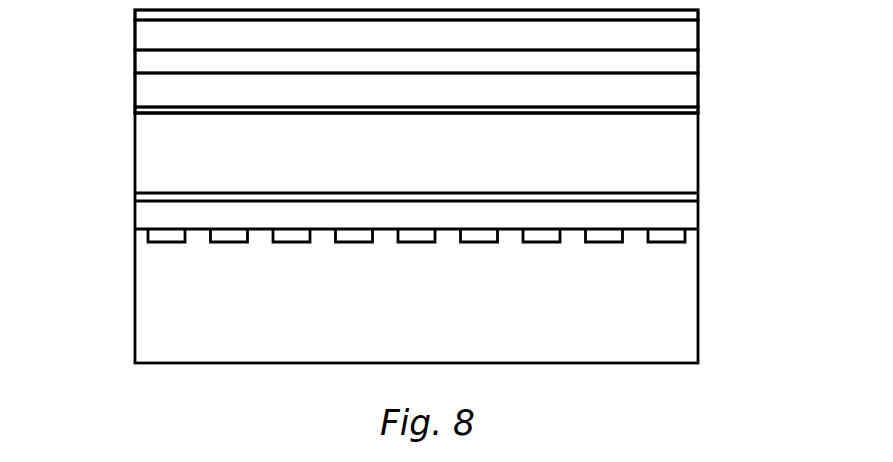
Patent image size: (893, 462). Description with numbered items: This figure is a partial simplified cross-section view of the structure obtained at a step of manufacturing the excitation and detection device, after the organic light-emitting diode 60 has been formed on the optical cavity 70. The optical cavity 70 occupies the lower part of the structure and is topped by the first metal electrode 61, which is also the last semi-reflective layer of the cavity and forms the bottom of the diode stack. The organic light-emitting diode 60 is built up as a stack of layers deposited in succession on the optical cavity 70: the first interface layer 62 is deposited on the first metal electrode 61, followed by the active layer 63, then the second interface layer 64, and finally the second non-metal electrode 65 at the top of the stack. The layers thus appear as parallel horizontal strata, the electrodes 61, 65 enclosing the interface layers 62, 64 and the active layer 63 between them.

The organic light-emitting diode 60 is at (403, 67).
The first metal electrode 61 is at (683, 109).
The first interface layer 62 is at (683, 90).
The active layer 63 is at (683, 63).
The second interface layer 64 is at (683, 38).
The second non-metal electrode 65 is at (683, 15).
The optical cavity 70 is at (135, 157).